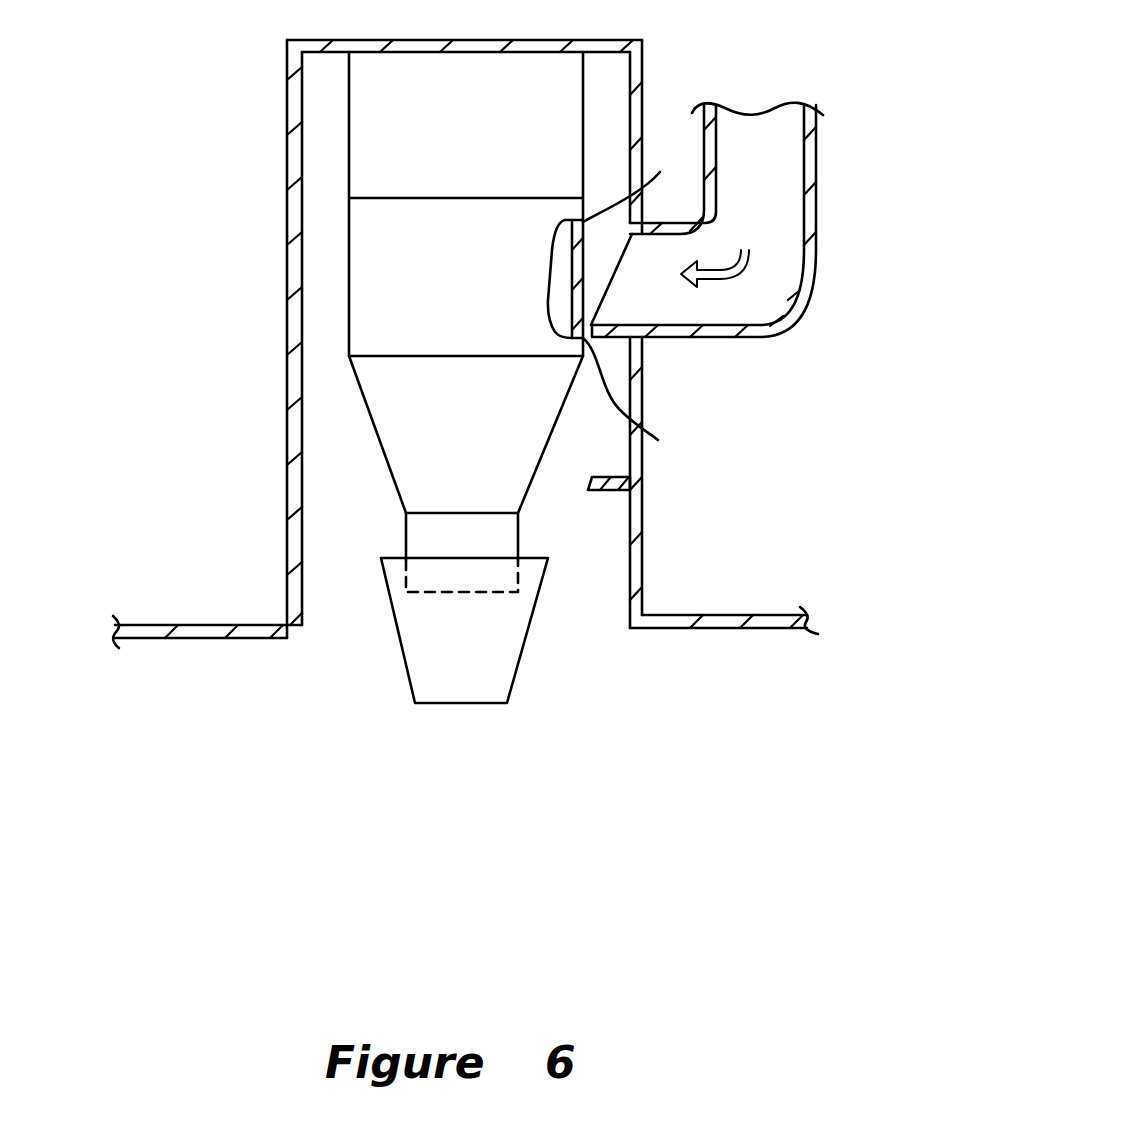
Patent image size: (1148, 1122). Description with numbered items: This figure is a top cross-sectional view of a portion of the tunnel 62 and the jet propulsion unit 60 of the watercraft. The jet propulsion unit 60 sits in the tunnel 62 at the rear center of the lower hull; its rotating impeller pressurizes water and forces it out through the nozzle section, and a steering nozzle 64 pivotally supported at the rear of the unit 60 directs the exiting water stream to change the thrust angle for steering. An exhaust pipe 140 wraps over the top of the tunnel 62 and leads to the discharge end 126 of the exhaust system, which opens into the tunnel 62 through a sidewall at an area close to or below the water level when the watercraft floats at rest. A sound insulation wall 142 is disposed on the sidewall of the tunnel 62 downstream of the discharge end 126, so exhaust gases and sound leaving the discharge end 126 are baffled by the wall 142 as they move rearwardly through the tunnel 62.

The jet propulsion unit 60 is at (328, 112).
The tunnel 62 is at (315, 315).
The steering nozzle 64 is at (468, 687).
The discharge end 126 is at (603, 262).
The exhaust pipe 140 is at (817, 253).
The sound insulation wall 142 is at (615, 493).